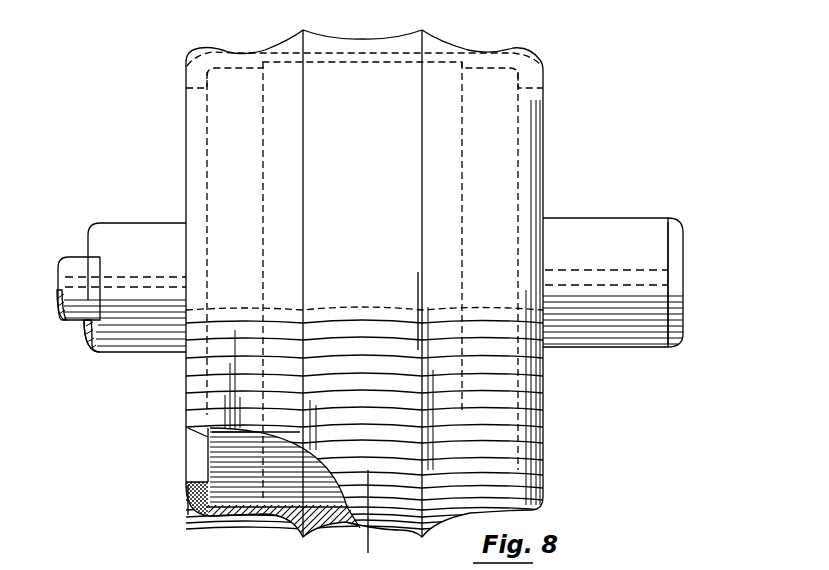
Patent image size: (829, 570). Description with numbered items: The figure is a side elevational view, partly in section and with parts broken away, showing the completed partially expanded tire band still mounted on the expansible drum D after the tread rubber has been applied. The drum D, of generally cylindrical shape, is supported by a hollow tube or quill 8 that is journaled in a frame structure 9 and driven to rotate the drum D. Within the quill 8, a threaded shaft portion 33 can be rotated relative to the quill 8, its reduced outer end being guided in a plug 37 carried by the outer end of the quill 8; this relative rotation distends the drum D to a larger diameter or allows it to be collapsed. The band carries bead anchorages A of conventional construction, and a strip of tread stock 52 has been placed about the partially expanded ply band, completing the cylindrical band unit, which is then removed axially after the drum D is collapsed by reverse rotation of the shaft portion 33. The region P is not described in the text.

The tread stock 52 is at (440, 43).
The quill 8 is at (135, 228).
The threaded shaft portion 33 is at (75, 262).
The plug 37 is at (678, 265).
The frame structure 9 is at (345, 553).
The expansible drum D is at (208, 460).
The bead anchorage A is at (184, 496).
The parting region P is at (225, 525).